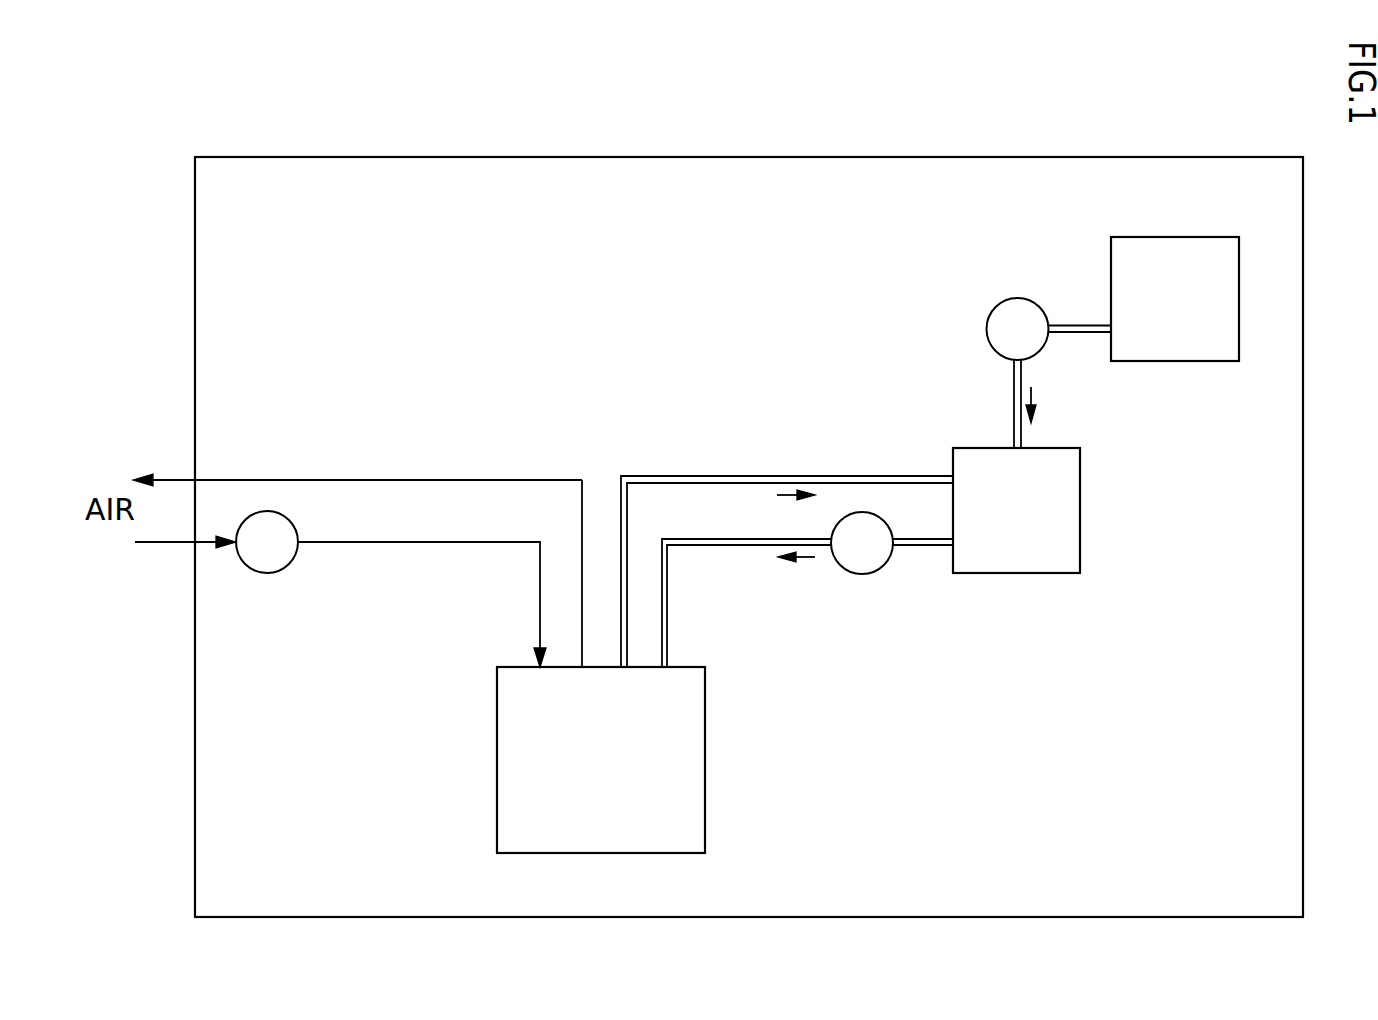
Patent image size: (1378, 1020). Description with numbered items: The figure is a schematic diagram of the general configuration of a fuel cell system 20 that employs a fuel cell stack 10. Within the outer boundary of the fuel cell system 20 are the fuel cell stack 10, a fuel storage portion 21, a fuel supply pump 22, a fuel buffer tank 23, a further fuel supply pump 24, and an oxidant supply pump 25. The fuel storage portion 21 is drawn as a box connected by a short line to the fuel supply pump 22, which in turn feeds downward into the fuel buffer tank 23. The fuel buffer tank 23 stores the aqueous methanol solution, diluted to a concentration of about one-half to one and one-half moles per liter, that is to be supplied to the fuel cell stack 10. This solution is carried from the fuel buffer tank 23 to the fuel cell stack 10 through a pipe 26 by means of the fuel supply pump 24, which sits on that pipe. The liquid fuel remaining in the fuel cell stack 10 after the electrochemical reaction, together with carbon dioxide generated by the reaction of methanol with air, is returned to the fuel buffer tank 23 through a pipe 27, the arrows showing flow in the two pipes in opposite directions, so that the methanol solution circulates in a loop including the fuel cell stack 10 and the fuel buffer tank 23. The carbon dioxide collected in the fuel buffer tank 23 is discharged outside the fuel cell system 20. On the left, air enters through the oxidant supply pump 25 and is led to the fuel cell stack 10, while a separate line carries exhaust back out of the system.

The fuel cell stack 10 is at (705, 757).
The fuel cell system 20 is at (950, 157).
The fuel storage portion 21 is at (1180, 237).
The fuel supply pump 22 is at (1029, 300).
The fuel buffer tank 23 is at (1080, 507).
The fuel supply pump 24 is at (867, 574).
The oxidant supply pump 25 is at (274, 573).
The pipe 26 is at (720, 546).
The pipe 27 is at (720, 476).